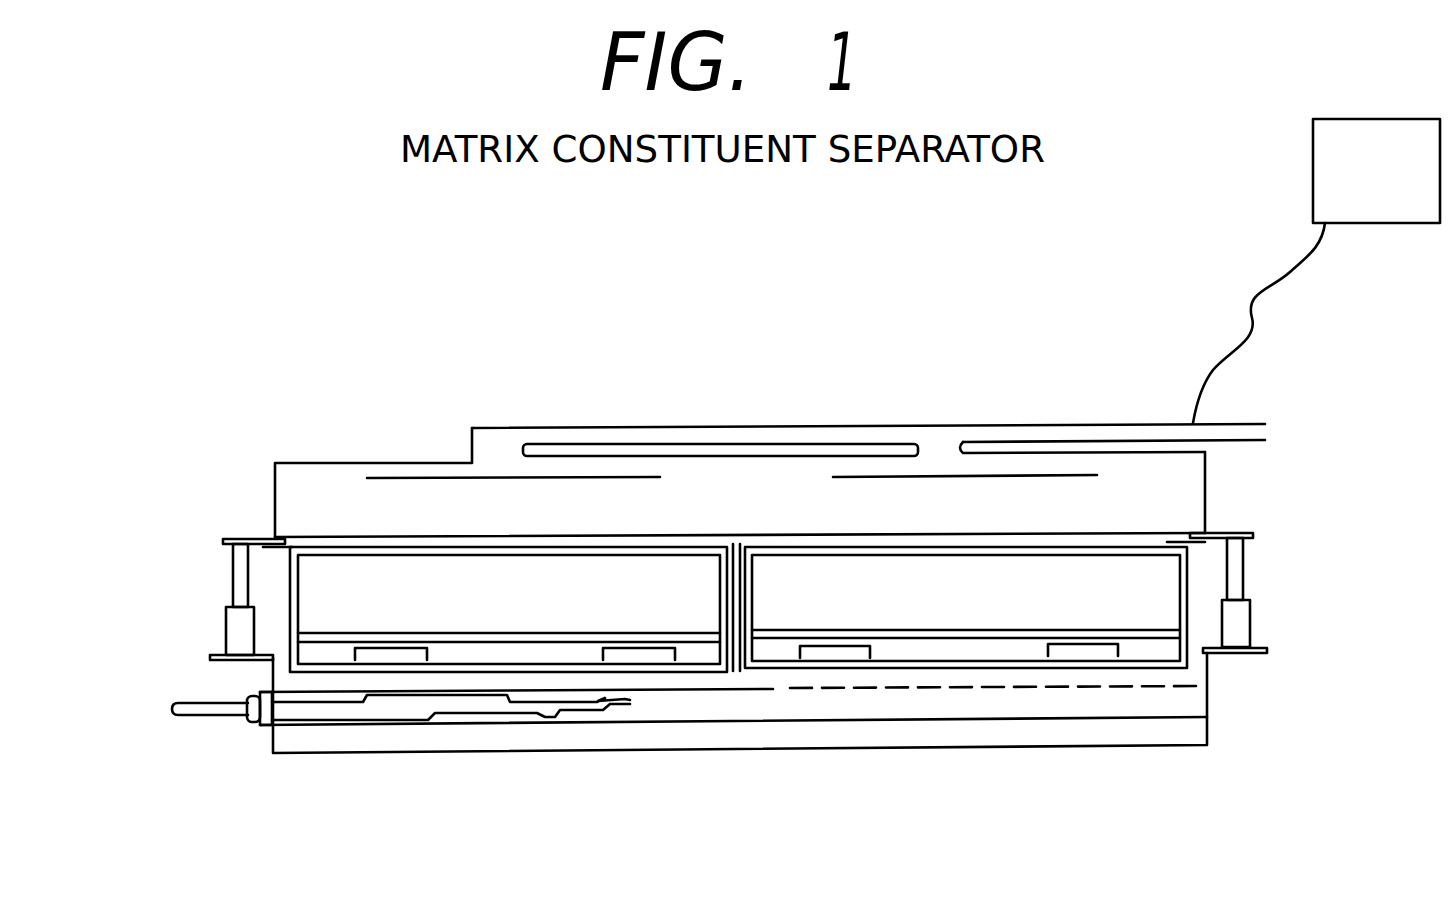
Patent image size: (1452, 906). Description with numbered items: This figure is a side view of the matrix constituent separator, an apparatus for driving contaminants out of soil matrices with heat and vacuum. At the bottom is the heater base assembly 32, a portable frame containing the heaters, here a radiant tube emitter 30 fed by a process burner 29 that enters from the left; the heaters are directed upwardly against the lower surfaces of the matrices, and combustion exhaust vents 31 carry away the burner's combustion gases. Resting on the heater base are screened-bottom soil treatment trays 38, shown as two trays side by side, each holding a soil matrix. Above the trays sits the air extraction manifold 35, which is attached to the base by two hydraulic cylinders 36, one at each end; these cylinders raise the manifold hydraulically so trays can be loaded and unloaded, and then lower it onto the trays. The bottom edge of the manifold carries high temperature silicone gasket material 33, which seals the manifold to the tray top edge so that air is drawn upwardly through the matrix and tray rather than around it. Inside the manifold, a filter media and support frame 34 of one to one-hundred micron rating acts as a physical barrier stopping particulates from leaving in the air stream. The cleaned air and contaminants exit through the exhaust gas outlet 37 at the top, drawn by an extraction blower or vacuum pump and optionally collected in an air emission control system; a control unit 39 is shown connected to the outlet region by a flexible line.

The process burner 29 is at (208, 717).
The radiant tube emitter 30 is at (1008, 712).
The combustion exhaust vents 31 is at (1100, 688).
The heater base assembly 32 is at (352, 755).
The high temperature silicone gasket material 33 is at (325, 535).
The filter media and support frame 34 is at (415, 478).
The air extraction manifold 35 is at (1207, 503).
The hydraulic cylinder 36 is at (1252, 624).
The exhaust gas outlet 37 is at (1113, 430).
The soil treatment tray 38 is at (773, 672).
The controller 39 is at (1323, 143).